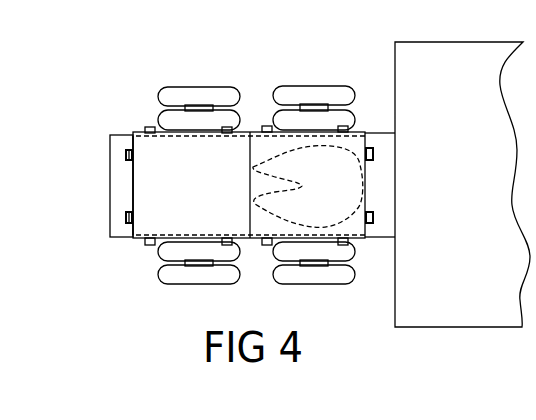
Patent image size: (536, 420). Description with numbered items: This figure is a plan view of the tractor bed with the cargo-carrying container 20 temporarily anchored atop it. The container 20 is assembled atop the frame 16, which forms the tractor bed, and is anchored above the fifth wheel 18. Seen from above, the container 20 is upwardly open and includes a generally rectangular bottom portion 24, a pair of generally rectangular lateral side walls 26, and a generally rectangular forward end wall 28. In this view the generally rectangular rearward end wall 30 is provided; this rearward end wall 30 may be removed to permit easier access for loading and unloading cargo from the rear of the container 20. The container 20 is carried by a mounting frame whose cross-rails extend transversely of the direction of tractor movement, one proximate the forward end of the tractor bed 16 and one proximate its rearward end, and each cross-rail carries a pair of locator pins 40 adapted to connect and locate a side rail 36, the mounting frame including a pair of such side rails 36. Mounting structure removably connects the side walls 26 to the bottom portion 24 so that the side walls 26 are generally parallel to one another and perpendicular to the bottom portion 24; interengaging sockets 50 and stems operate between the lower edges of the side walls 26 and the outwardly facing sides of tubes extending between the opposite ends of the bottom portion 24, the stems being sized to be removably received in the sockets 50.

The frame 16 is at (110, 189).
The fifth wheel 18 is at (365, 170).
The cargo-carrying container 20 is at (113, 250).
The bottom portion 24 is at (204, 198).
The lateral side walls 26 is at (178, 242).
The forward end wall 28 is at (367, 200).
The rearward end wall 30 is at (133, 171).
The side rails 36 is at (126, 156).
The locator pins 40 is at (128, 150).
The sockets 50 is at (148, 126).